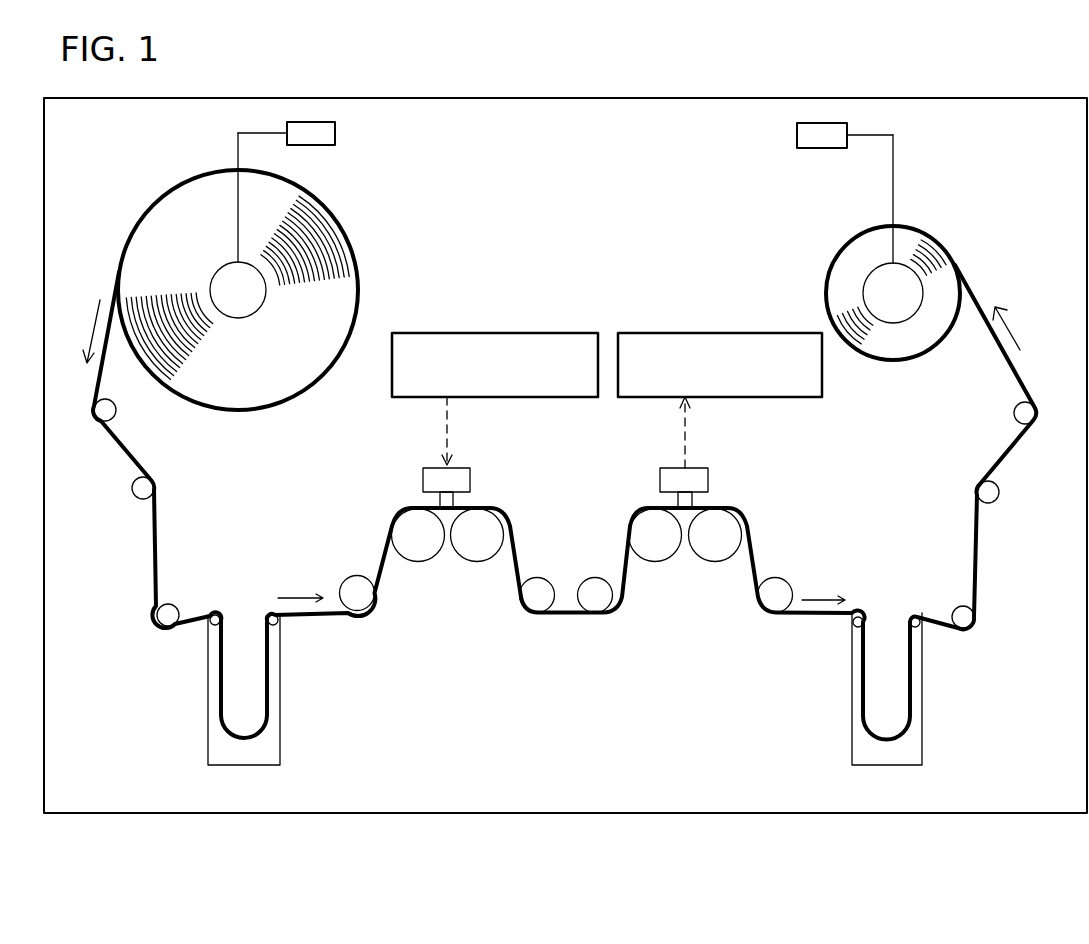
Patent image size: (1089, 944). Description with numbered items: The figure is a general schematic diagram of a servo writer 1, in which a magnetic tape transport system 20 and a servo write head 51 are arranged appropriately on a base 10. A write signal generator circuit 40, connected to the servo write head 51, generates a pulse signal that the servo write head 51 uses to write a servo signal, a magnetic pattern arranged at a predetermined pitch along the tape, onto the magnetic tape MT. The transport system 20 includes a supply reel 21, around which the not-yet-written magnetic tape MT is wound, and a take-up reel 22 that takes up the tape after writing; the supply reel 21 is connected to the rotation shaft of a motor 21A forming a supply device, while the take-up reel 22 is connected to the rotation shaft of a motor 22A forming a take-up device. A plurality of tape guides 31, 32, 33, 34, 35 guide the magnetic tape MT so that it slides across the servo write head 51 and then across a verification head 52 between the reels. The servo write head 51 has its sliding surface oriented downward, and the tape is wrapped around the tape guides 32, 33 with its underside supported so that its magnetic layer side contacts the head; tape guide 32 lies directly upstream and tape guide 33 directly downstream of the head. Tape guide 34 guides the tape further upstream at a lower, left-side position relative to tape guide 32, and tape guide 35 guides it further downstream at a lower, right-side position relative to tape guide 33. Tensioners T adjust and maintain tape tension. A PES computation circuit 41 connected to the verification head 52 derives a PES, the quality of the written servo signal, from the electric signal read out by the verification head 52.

The servo writer 1 is at (802, 68).
The base 10 is at (558, 97).
The magnetic tape transport system 20 is at (410, 270).
The supply reel 21 is at (250, 305).
The motor 21A is at (335, 133).
The take-up reel 22 is at (877, 280).
The motor 22A is at (797, 135).
The tape guide 31 is at (112, 412).
The tape guide 32 is at (427, 553).
The tape guide 33 is at (487, 557).
The tape guide 34 is at (353, 585).
The tape guide 35 is at (535, 582).
The write signal generator circuit 40 is at (543, 332).
The PES computation circuit 41 is at (763, 332).
The servo write head 51 is at (453, 500).
The verification head 52 is at (692, 500).
The magnetic tape MT is at (307, 378).
The tensioner T is at (280, 702).